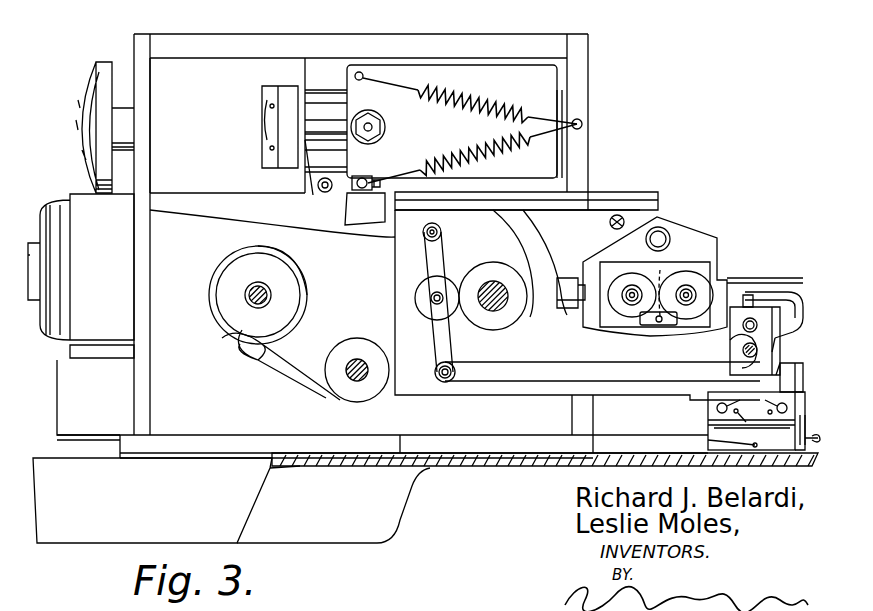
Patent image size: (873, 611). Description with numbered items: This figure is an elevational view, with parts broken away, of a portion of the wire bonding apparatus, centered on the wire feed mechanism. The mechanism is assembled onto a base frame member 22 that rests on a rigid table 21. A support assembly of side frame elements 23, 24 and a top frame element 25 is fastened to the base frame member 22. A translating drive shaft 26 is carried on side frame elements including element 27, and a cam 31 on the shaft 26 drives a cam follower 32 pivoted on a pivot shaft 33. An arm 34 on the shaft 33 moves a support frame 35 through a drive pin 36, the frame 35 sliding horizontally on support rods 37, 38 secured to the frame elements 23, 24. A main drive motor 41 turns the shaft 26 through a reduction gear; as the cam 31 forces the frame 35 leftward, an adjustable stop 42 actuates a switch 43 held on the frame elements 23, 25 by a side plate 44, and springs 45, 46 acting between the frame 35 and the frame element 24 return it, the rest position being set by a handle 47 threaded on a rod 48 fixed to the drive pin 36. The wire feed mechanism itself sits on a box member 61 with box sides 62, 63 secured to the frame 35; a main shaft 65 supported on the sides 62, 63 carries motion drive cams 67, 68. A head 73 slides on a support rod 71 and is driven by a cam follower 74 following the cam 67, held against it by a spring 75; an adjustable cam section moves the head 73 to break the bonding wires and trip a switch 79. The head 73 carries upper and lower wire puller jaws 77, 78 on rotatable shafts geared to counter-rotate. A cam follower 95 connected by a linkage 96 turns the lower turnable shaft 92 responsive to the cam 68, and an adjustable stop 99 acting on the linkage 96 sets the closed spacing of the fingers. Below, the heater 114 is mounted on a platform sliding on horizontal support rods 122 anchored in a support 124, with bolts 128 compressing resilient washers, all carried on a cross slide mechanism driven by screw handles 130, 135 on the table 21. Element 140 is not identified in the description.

The rigid table 21 is at (186, 524).
The base frame member 22 is at (226, 460).
The side frame element 23 is at (136, 398).
The side frame element 24 is at (582, 102).
The top frame element 25 is at (327, 42).
The translating drive shaft 26 is at (259, 282).
The side frame element 27 is at (192, 210).
The cam 31 is at (300, 256).
The cam follower 32 is at (250, 368).
The pivot shaft 33 is at (356, 383).
The arm 34 is at (347, 150).
The support frame 35 is at (478, 60).
The drive pin 36 is at (374, 128).
The support rod 37 is at (305, 80).
The support rod 38 is at (317, 178).
The main drive motor 41 is at (103, 247).
The adjustable stop 42 is at (344, 178).
The switch 43 is at (280, 170).
The side plate 44 is at (218, 120).
The spring 45 is at (470, 148).
The spring 46 is at (126, 112).
The handle 47 is at (78, 145).
The rod 48 is at (332, 118).
The box member 61 is at (633, 189).
The box side 62 is at (584, 232).
The box side 63 is at (588, 357).
The main shaft 65 is at (490, 308).
The cam 67 is at (514, 234).
The cam 68 is at (488, 264).
The support rod 71 is at (666, 232).
The head 73 is at (726, 266).
The cam follower 74 is at (566, 278).
The spring 75 is at (628, 218).
The upper wire puller jaw 77 is at (757, 300).
The lower wire puller jaw 78 is at (748, 295).
The switch 79 is at (650, 325).
The turnable shaft 92 is at (742, 350).
The cam follower 95 is at (428, 288).
The linkage 96 is at (512, 362).
The stop 99 is at (752, 362).
The heater 114 is at (778, 328).
The support rods 122 is at (752, 405).
The support 124 is at (708, 408).
The bolts 128 is at (752, 420).
The screw handle 130 is at (802, 452).
The screw handle 135 is at (708, 440).
The rail 140 is at (782, 358).